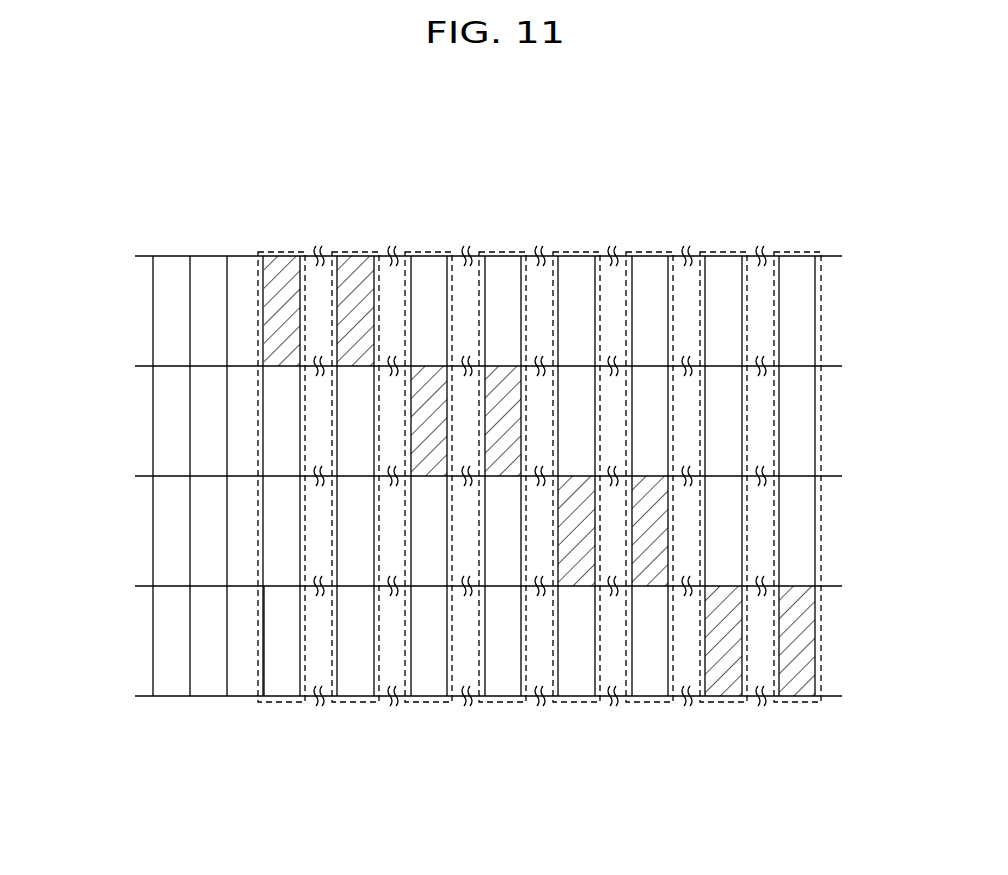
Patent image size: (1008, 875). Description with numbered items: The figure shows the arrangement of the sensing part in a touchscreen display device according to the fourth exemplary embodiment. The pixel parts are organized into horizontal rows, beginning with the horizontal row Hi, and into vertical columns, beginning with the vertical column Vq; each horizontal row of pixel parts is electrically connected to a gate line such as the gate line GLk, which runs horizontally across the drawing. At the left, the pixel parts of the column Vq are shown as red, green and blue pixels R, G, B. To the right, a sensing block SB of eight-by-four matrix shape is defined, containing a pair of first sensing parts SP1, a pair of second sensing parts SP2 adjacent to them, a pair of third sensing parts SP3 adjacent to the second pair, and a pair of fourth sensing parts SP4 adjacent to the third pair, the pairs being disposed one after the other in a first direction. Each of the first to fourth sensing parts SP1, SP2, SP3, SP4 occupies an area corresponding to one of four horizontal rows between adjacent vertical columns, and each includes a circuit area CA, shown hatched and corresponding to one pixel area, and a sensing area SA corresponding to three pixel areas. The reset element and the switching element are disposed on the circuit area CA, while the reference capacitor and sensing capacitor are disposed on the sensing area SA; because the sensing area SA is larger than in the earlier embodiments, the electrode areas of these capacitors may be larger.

The gate line GLk is at (467, 255).
The vertical column Vq is at (208, 452).
The red pixel R is at (178, 476).
The green pixel G is at (214, 476).
The blue pixel B is at (251, 476).
The circuit area CA is at (278, 264).
The sensing area SA is at (271, 670).
The sensing block SB is at (539, 438).
The first sensing part SP1 is at (318, 476).
The second sensing part SP2 is at (429, 704).
The third sensing part SP3 is at (576, 704).
The fourth sensing part SP4 is at (723, 704).
The (i)-th horizontal row Hi is at (832, 258).